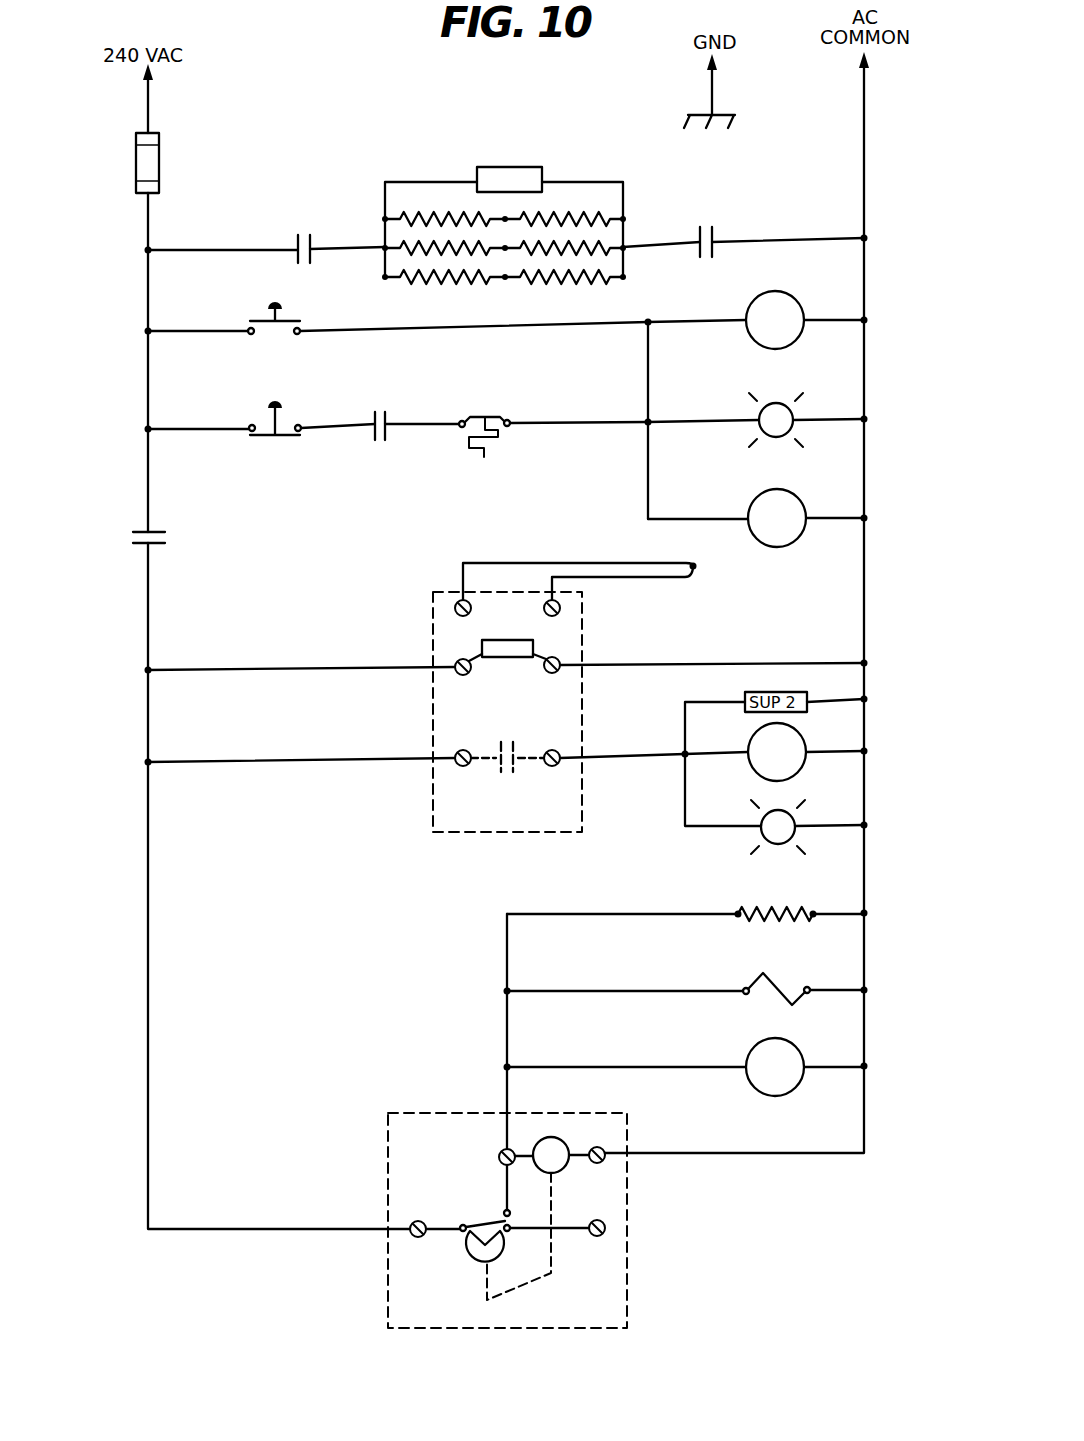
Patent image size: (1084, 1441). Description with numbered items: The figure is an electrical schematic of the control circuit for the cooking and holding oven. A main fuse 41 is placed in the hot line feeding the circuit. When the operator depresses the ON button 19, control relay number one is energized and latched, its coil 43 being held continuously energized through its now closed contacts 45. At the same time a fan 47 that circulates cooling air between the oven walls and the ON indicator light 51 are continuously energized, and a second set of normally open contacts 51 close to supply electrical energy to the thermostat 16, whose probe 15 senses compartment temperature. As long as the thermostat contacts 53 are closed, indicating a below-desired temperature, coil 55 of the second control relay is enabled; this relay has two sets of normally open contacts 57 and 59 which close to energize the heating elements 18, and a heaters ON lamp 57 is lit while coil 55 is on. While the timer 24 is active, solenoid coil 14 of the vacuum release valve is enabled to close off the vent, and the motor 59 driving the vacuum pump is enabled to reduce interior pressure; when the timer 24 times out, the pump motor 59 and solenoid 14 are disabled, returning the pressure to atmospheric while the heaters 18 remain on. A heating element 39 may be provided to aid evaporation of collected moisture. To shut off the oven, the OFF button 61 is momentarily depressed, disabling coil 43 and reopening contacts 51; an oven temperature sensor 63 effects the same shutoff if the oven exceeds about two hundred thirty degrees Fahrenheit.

The main fuse 41 is at (159, 143).
The heating elements 18 is at (440, 217).
The normally open contacts / heaters ON lamp 57 is at (297, 240).
The normally open contacts / pump motor 59 is at (716, 237).
The ON button 19 is at (272, 311).
The coil 43 is at (795, 301).
The OFF button 61 is at (268, 406).
The contacts 45 is at (375, 440).
The oven temperature sensor 63 is at (503, 420).
The ON indicator light / normally open contacts 51 is at (758, 412).
The fan 47 is at (754, 497).
The probe 15 is at (695, 569).
The thermostat contacts 53 is at (516, 744).
The thermostat 16 is at (488, 724).
The coil 55 is at (752, 770).
The heating element 39 is at (770, 922).
The solenoid coil / vacuum release valve 14 is at (770, 992).
The timer 24 is at (398, 1159).